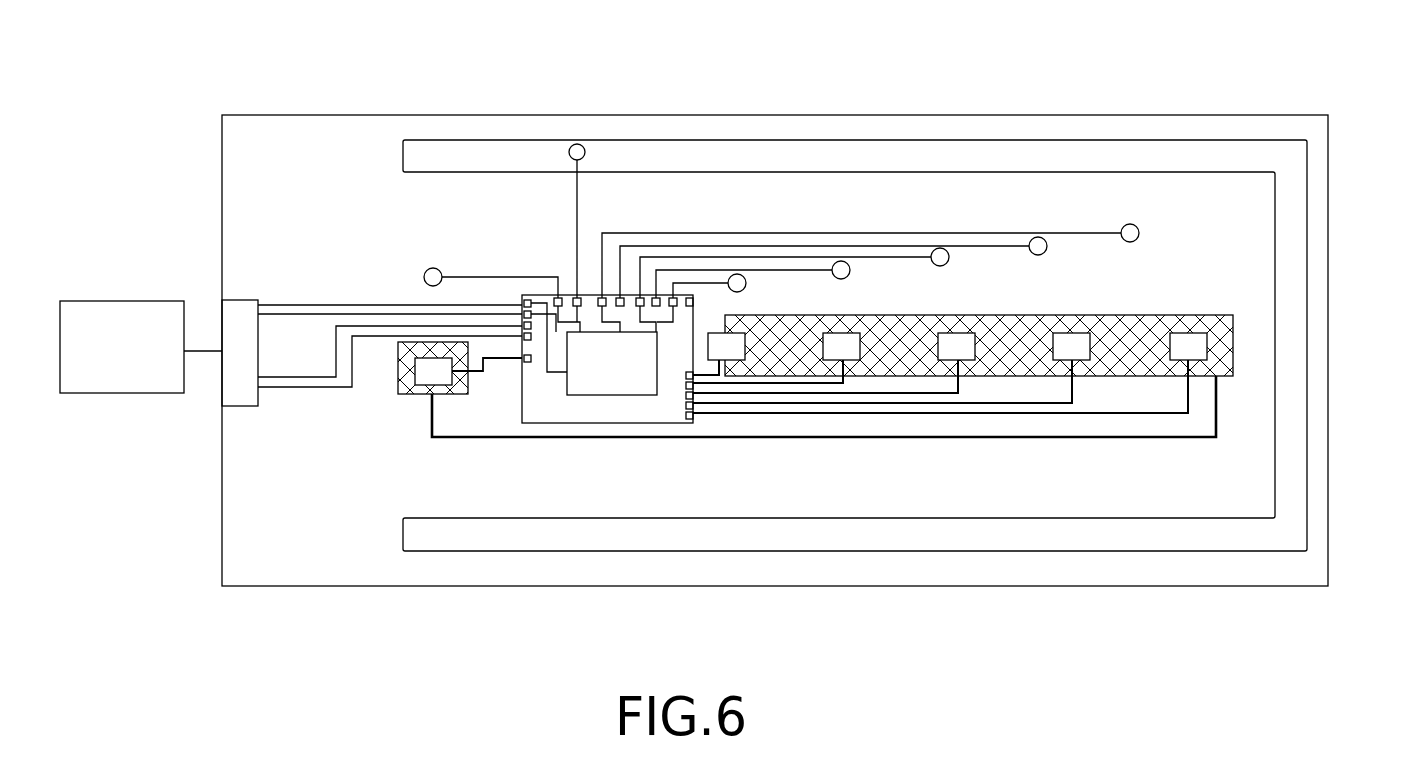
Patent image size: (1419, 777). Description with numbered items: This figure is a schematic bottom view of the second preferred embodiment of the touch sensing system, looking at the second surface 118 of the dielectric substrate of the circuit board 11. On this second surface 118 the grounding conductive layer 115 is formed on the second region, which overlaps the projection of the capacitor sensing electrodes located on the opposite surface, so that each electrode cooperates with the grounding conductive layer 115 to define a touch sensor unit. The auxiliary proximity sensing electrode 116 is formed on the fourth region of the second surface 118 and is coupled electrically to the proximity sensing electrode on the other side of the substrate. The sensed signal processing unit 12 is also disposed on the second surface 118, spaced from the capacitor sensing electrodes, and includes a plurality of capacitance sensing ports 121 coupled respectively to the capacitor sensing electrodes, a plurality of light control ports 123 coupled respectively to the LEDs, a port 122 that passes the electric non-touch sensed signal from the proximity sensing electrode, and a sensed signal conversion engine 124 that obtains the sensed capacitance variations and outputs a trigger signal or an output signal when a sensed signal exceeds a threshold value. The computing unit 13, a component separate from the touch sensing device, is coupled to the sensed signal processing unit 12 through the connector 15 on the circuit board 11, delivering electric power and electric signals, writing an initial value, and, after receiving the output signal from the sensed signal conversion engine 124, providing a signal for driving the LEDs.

The circuit board 11 is at (236, 102).
The second surface 118 is at (337, 160).
The auxiliary proximity sensing electrode 116 is at (1290, 233).
The computing unit 13 is at (117, 327).
The connector 15 is at (243, 327).
The sensed signal processing unit 12 is at (517, 60).
The port 122 is at (572, 298).
The sensed signal conversion engine 124 is at (598, 355).
The capacitance sensing ports 121 is at (656, 298).
The light control ports 123 is at (690, 298).
The grounding conductive layer 115 is at (1003, 315).